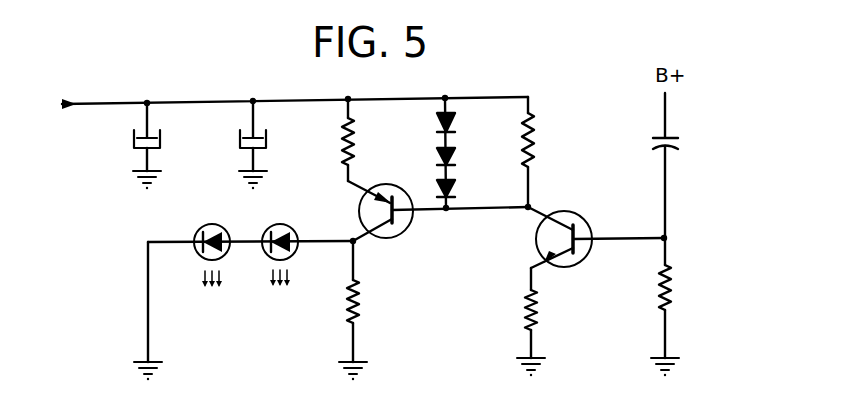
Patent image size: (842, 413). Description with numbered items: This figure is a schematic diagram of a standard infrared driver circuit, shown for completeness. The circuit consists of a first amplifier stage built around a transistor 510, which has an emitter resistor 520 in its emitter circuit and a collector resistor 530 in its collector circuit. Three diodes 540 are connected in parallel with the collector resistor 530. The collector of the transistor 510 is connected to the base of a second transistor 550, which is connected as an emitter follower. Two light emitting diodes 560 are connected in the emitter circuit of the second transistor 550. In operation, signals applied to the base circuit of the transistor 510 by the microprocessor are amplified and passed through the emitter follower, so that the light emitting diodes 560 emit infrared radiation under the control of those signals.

The transistor 510 is at (578, 213).
The emitter resistor 520 is at (527, 312).
The collector resistor 530 is at (533, 138).
The diodes 540 is at (437, 184).
The second transistor 550 is at (411, 227).
The light emitting diodes 560 is at (213, 223).